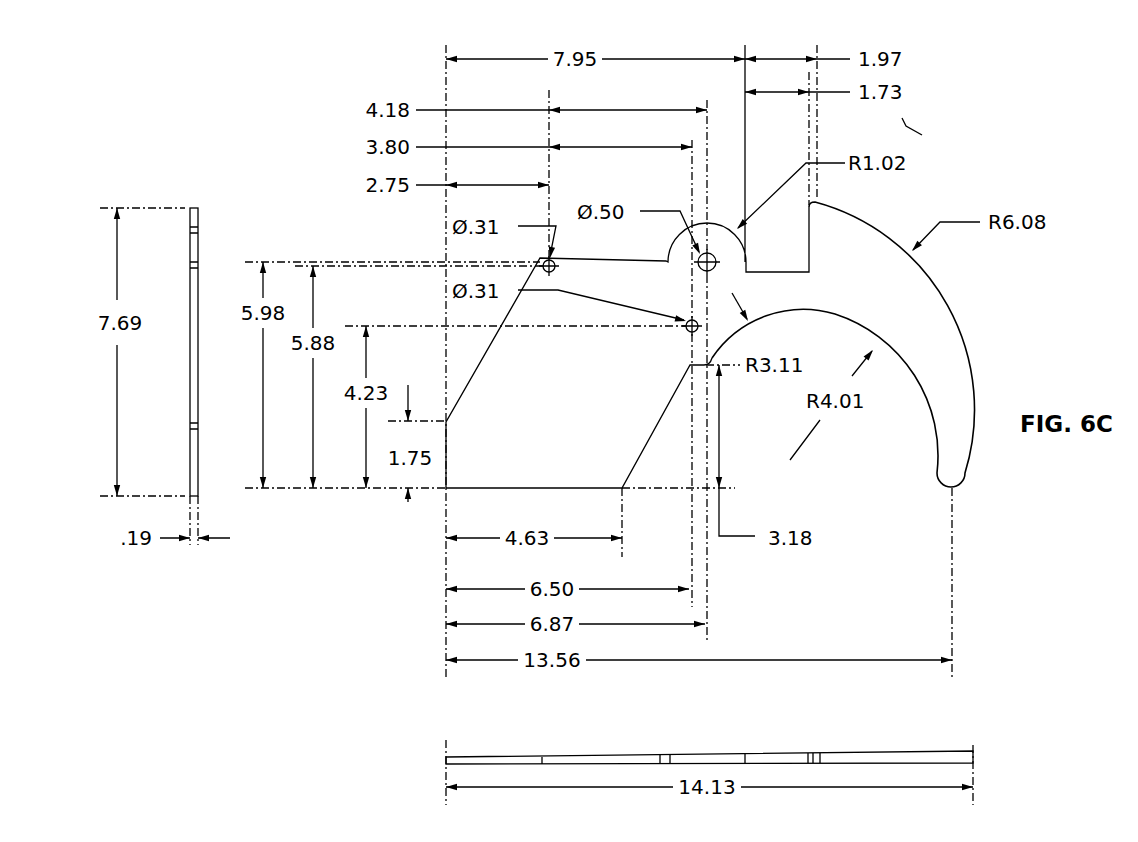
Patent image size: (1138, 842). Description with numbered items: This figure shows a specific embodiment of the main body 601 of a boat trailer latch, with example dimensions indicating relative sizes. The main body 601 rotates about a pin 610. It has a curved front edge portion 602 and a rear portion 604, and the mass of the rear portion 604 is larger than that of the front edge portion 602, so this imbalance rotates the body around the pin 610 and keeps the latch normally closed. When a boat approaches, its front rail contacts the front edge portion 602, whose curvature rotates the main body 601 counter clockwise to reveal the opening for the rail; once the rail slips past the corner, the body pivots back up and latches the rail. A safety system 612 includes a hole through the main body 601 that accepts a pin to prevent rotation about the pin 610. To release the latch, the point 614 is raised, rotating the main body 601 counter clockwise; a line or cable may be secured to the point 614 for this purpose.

The main body 601 is at (733, 266).
The front edge portion 602 is at (951, 312).
The rear portion 604 is at (562, 428).
The pin 610 is at (716, 269).
The safety system 612 is at (689, 333).
The point 614 is at (557, 270).